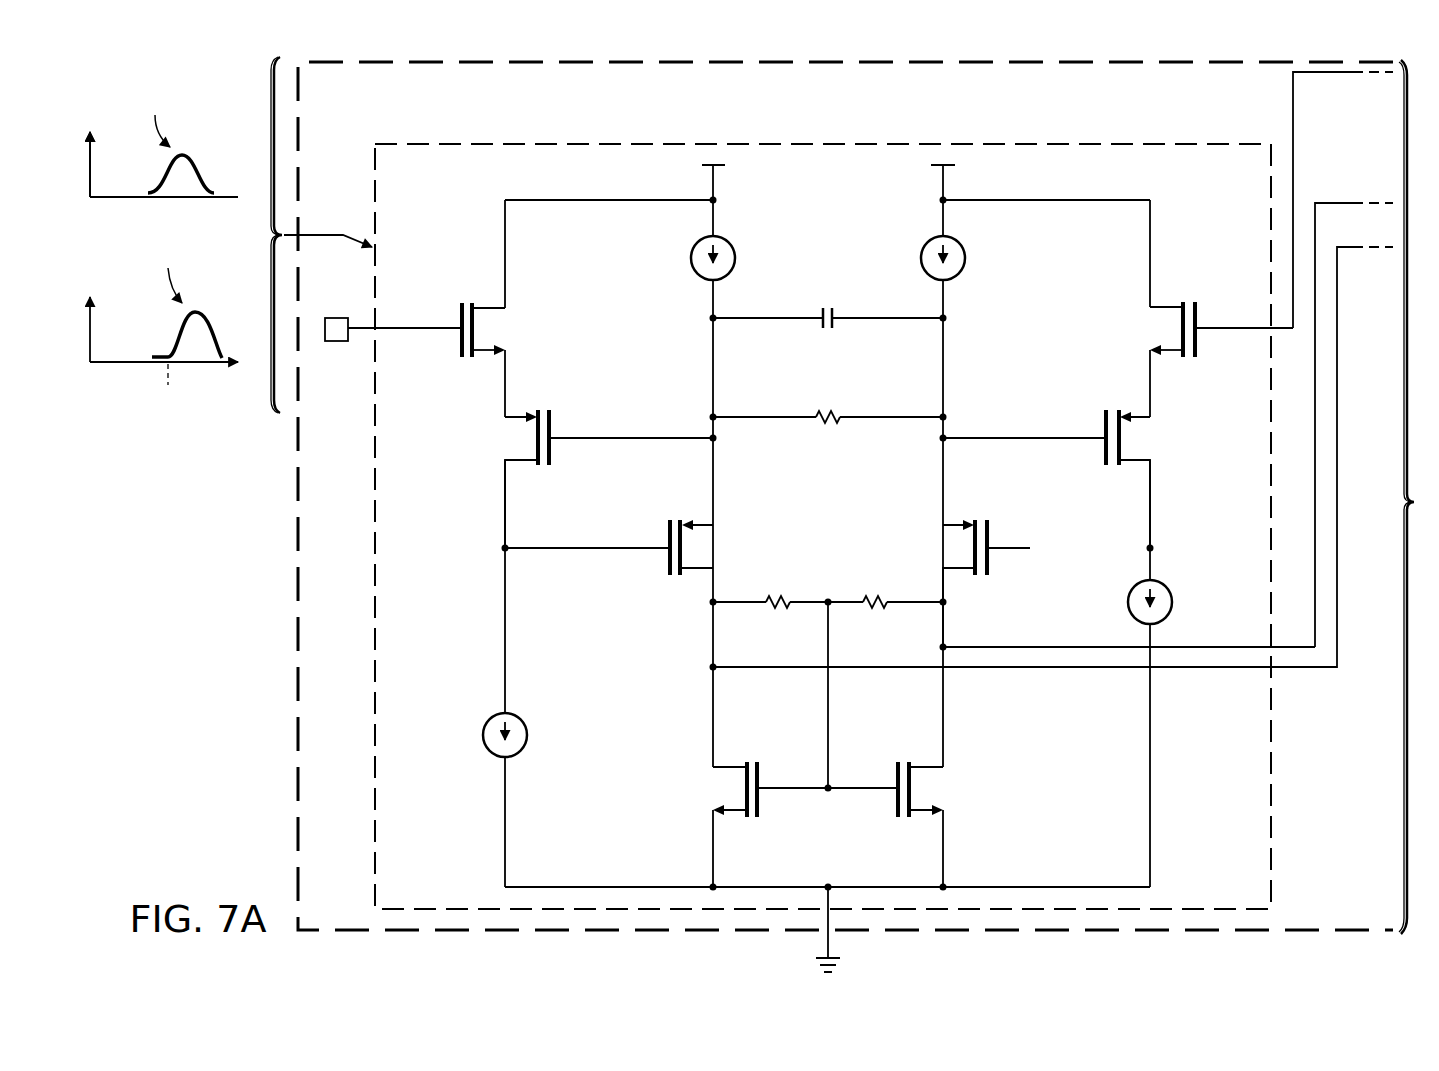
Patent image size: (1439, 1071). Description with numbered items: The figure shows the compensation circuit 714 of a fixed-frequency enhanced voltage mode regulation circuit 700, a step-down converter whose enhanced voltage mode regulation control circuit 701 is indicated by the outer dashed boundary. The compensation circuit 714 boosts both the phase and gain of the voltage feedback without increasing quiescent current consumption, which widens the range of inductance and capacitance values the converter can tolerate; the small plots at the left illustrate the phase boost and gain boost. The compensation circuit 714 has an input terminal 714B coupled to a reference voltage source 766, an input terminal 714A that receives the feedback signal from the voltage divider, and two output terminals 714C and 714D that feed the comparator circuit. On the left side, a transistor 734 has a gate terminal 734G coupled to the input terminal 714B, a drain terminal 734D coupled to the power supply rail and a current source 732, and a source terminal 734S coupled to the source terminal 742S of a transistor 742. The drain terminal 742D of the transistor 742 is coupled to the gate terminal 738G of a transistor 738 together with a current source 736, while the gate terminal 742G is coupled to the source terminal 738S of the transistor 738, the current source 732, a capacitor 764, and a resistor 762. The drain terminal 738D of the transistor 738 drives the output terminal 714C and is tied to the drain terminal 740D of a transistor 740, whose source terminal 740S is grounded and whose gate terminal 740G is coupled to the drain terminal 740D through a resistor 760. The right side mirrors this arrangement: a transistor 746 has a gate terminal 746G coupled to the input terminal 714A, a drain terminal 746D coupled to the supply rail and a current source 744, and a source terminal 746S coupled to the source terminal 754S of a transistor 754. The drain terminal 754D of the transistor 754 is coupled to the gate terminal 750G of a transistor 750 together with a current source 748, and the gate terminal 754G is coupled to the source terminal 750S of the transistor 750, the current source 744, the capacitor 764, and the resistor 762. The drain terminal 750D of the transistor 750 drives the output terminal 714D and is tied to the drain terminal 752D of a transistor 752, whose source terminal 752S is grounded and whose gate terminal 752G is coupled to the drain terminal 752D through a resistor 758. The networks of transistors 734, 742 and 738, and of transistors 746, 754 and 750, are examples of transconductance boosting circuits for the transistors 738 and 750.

The fixed-frequency enhanced voltage mode regulation circuit 700 is at (192, 650).
The enhanced voltage mode regulation control circuit 701 is at (290, 497).
The compensation circuit 714 is at (738, 137).
The input terminal 714A is at (1293, 115).
The input terminal 714B is at (362, 336).
The output terminal 714C is at (1300, 670).
The output terminal 714D is at (1333, 203).
The current source 732 is at (735, 258).
The transistor 734 is at (455, 312).
The drain terminal 734D is at (490, 307).
The gate terminal 734G is at (440, 333).
The source terminal 734S is at (490, 358).
The current source 736 is at (527, 735).
The transistor 738 is at (660, 533).
The source terminal 738S is at (698, 522).
The gate terminal 738G is at (652, 550).
The drain terminal 738D is at (697, 572).
The transistor 740 is at (765, 772).
The drain terminal 740D is at (727, 762).
The gate terminal 740G is at (777, 790).
The source terminal 740S is at (737, 813).
The transistor 742 is at (560, 423).
The source terminal 742S is at (517, 408).
The gate terminal 742G is at (568, 440).
The drain terminal 742D is at (522, 462).
The current source 744 is at (965, 258).
The transistor 746 is at (1203, 312).
The drain terminal 746D is at (1165, 307).
The gate terminal 746G is at (1213, 330).
The source terminal 746S is at (1172, 353).
The current source 748 is at (1172, 602).
The transistor 750 is at (998, 532).
The source terminal 750S is at (955, 523).
The gate terminal 750G is at (1007, 550).
The drain terminal 750D is at (960, 573).
The transistor 752 is at (891, 772).
The drain terminal 752D is at (927, 762).
The gate terminal 752G is at (880, 790).
The source terminal 752S is at (920, 813).
The transistor 754 is at (1096, 423).
The source terminal 754S is at (1138, 408).
The gate terminal 754G is at (1090, 440).
The drain terminal 754D is at (1133, 462).
The resistor 758 is at (875, 607).
The resistor 760 is at (778, 607).
The resistor 762 is at (832, 422).
The capacitor 764 is at (832, 332).
The reference voltage source 766 is at (335, 318).